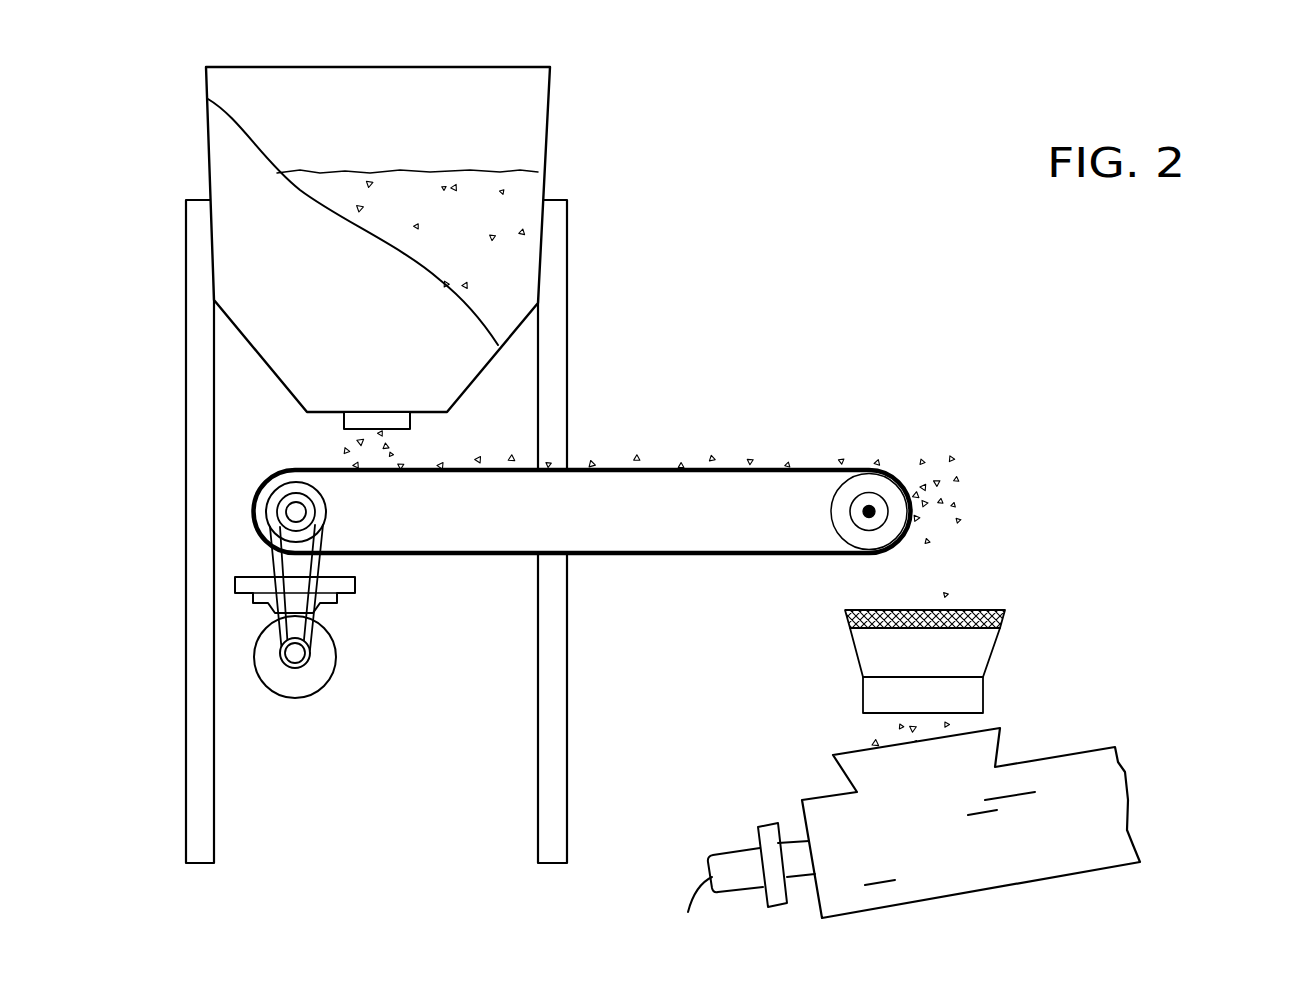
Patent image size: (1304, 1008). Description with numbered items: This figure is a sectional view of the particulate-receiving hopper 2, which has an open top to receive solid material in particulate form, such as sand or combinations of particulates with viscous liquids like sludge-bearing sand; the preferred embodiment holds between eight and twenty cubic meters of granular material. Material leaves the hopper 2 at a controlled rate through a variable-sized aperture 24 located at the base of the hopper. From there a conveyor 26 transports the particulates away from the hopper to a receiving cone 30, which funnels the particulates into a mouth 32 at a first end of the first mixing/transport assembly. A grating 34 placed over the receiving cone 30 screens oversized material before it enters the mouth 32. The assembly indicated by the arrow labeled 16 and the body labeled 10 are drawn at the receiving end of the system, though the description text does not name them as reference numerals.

The hopper 2 is at (611, 180).
The variable-sized aperture 24 is at (380, 430).
The conveyor 26 is at (745, 468).
The grating 34 is at (993, 608).
The receiving cone 30 is at (982, 655).
The mouth 32 is at (853, 750).
The sandblasting apparatus 16 is at (1190, 758).
The blast machine body 10 is at (993, 788).